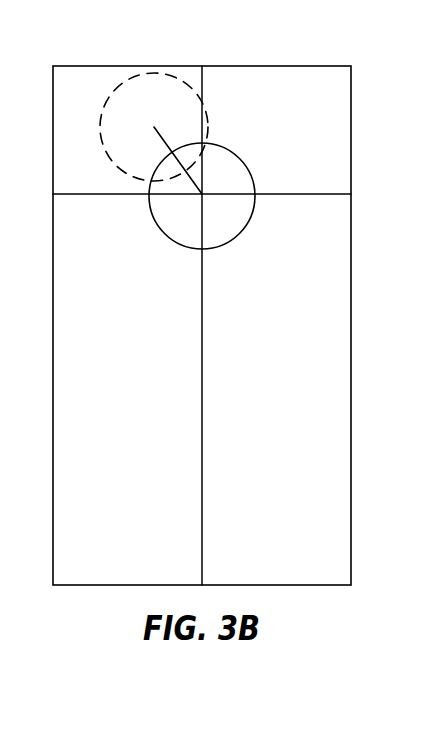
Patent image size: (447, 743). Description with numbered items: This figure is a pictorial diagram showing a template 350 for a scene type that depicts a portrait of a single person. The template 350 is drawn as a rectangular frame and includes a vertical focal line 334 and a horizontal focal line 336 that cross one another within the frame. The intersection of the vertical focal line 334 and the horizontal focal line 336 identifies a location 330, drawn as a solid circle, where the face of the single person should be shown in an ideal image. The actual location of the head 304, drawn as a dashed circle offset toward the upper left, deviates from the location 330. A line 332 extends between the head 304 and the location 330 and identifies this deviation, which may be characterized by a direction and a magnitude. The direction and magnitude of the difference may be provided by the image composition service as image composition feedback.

The head 304 is at (158, 75).
The location 330 is at (252, 176).
The line 332 is at (158, 130).
The vertical focal line 334 is at (203, 335).
The horizontal focal line 336 is at (317, 194).
The template 350 is at (342, 65).